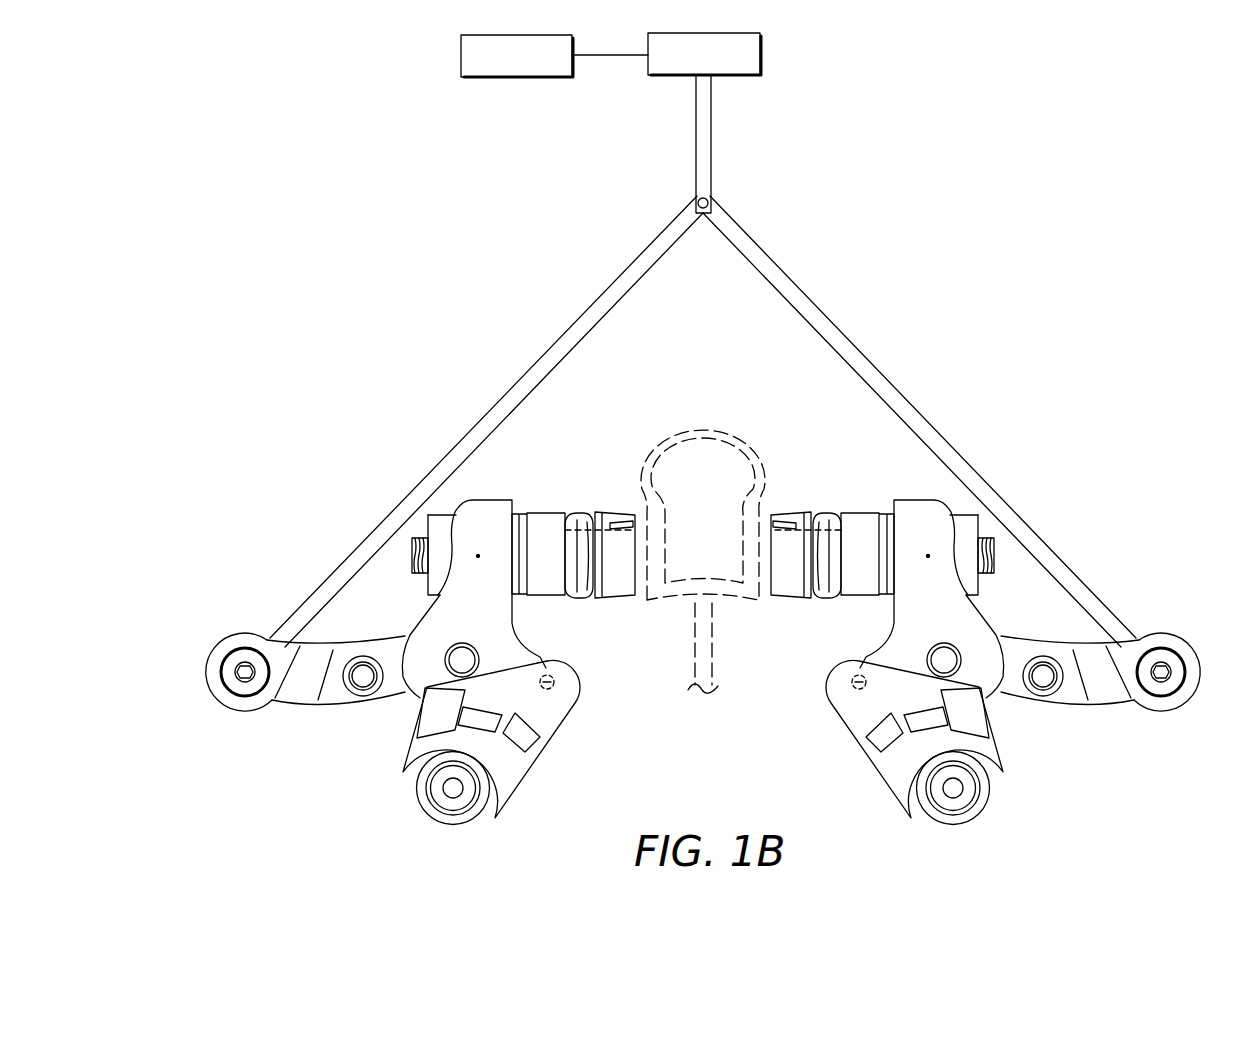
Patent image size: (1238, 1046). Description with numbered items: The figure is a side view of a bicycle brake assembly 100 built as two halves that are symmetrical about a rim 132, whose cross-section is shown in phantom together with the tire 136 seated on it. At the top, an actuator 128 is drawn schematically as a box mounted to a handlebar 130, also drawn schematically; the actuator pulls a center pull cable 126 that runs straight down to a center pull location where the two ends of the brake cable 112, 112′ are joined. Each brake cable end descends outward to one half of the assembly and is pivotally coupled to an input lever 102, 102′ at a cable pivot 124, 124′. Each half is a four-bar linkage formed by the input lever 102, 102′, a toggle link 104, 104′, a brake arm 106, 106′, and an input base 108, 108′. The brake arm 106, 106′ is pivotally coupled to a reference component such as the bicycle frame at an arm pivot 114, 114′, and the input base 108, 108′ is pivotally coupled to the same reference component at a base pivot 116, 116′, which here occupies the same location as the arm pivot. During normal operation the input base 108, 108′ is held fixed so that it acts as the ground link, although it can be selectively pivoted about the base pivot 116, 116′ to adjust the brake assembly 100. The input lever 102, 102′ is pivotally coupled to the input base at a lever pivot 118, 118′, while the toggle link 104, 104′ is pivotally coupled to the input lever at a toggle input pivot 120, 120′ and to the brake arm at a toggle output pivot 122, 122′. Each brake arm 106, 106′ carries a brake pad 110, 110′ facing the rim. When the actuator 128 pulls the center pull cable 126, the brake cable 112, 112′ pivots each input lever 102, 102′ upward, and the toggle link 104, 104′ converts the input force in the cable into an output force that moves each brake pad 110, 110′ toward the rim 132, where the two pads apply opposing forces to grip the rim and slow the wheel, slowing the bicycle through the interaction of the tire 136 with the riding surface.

The brake assembly 100 is at (193, 318).
The input lever 102 is at (1108, 693).
The input lever 102′ is at (298, 693).
The toggle link 104 is at (1021, 655).
The toggle link 104′ is at (385, 655).
The brake arm 106 is at (924, 512).
The brake arm 106′ is at (482, 512).
The input base 108 is at (866, 715).
The input base 108′ is at (540, 715).
The brake pad 110 is at (796, 540).
The brake pad 110′ is at (610, 540).
The brake cable 112 is at (1023, 520).
The brake cable 112′ is at (383, 520).
The arm pivot 114 is at (953, 790).
The arm pivot 114′ is at (453, 790).
The base pivot 116 is at (953, 790).
The base pivot 116′ is at (453, 790).
The lever pivot 118 is at (846, 685).
The lever pivot 118′ is at (560, 685).
The toggle input pivot 120 is at (1043, 680).
The toggle input pivot 120′ is at (363, 680).
The toggle output pivot 122 is at (944, 660).
The toggle output pivot 122′ is at (462, 660).
The cable pivot 124 is at (1163, 672).
The cable pivot 124′ is at (243, 672).
The center pull cable 126 is at (711, 140).
The actuator 128 is at (760, 50).
The handlebar 130 is at (461, 50).
The rim 132 is at (745, 600).
The tire 136 is at (712, 422).